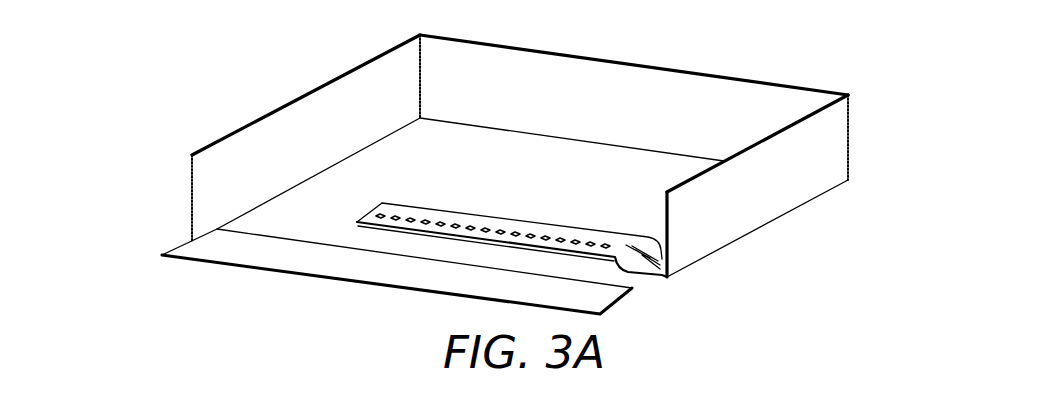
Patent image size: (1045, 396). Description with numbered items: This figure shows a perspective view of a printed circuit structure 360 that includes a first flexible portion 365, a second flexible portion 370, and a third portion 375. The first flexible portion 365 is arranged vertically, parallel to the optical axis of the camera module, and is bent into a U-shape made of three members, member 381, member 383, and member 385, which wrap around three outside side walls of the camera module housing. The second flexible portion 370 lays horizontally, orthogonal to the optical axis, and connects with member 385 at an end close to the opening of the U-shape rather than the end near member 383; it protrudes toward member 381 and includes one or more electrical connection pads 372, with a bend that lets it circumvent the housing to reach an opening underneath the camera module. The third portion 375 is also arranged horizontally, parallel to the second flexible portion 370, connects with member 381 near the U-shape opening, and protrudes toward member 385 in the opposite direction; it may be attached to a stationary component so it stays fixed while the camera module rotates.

The printed circuit structure 360 is at (250, 68).
The first flexible portion 365 is at (792, 57).
The second flexible portion 370 is at (421, 206).
The electrical connection pads 372 is at (602, 220).
The third portion 375 is at (295, 271).
The member 381 is at (318, 170).
The member 383 is at (598, 127).
The member 385 is at (753, 228).